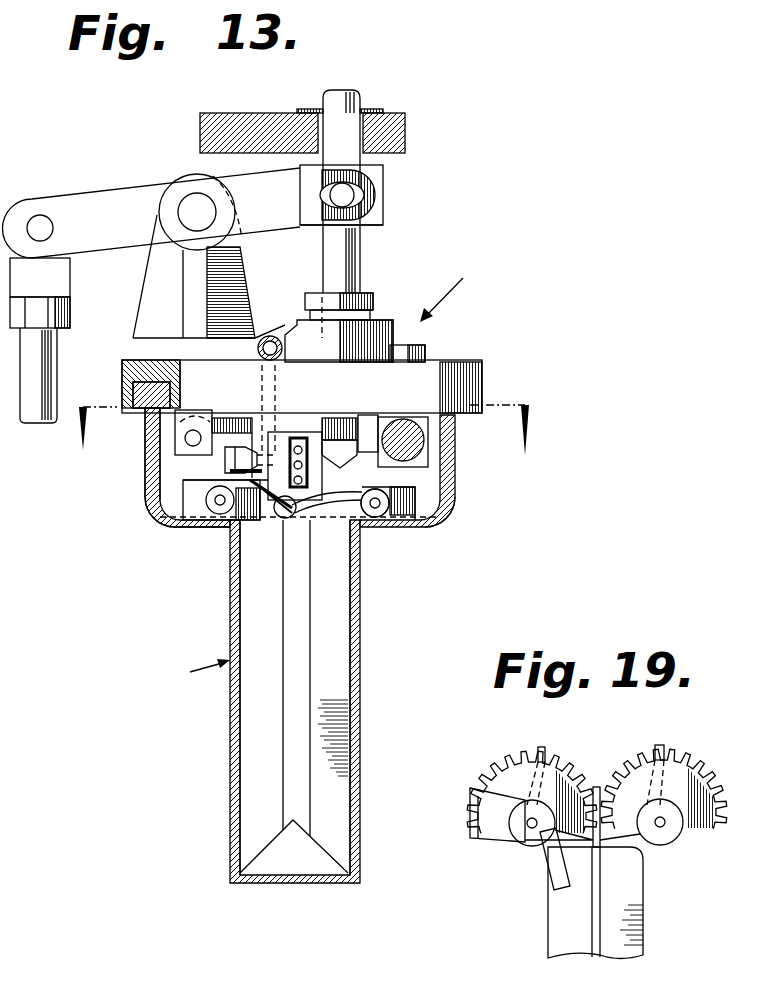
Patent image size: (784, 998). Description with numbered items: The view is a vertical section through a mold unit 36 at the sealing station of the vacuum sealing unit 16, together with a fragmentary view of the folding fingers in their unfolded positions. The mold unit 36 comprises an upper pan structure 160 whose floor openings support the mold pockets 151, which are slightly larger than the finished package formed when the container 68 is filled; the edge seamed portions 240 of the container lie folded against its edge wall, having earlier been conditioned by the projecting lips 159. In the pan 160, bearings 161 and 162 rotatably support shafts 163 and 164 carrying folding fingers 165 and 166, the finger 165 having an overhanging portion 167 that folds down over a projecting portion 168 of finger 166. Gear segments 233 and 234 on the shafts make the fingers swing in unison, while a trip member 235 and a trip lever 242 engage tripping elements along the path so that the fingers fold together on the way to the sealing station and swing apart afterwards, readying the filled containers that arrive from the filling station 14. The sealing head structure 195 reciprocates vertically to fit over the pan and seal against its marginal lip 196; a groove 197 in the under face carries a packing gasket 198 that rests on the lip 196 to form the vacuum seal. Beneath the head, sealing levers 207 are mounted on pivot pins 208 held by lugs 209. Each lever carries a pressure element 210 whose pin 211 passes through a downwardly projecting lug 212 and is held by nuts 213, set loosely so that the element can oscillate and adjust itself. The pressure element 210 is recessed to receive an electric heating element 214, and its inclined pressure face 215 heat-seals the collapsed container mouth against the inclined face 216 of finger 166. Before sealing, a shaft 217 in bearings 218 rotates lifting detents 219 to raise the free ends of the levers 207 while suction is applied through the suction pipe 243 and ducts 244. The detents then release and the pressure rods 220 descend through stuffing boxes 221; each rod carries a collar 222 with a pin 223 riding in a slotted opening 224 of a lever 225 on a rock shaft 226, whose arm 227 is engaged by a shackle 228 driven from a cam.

In FIG. 13, the filling station 14 is at (303, 437).
In FIG. 13, the vacuum sealing unit 16 is at (455, 294).
In FIG. 13, the mold unit 36 is at (194, 671).
In FIG. 13, the container 68 is at (258, 771).
In FIG. 19, the container 68 is at (643, 941).
In FIG. 13, the mold pocket 151 is at (362, 585).
In FIG. 13, the projecting lip 159 is at (280, 856).
In FIG. 13, the upper pan structure 160 is at (452, 452).
In FIG. 13, the bearing 161 is at (440, 510).
In FIG. 13, the bearing 162 is at (200, 513).
In FIG. 13, the shaft 163 is at (410, 520).
In FIG. 19, the shaft 163 is at (676, 836).
In FIG. 13, the shaft 164 is at (220, 512).
In FIG. 19, the shaft 164 is at (532, 830).
In FIG. 13, the folding finger 165 is at (380, 515).
In FIG. 19, the folding finger 165 is at (672, 764).
In FIG. 13, the folding finger 166 is at (245, 515).
In FIG. 19, the folding finger 166 is at (548, 768).
In FIG. 13, the overhanging portion 167 is at (370, 487).
In FIG. 13, the projecting portion 168 is at (266, 496).
In FIG. 13, the sealing head structure 195 is at (478, 368).
In FIG. 13, the marginal lip 196 is at (150, 424).
In FIG. 13, the groove 197 is at (182, 398).
In FIG. 13, the packing gasket 198 is at (135, 390).
In FIG. 13, the sealing lever 207 is at (280, 453).
In FIG. 13, the pivot pin 208 is at (185, 439).
In FIG. 13, the lug 209 is at (195, 424).
In FIG. 13, the pressure element 210 is at (333, 418).
In FIG. 13, the pin 211 is at (262, 405).
In FIG. 13, the downwardly projecting lug 212 is at (190, 480).
In FIG. 13, the nut 213 is at (225, 460).
In FIG. 13, the electric heating element 214 is at (308, 462).
In FIG. 13, the inclined pressure face 215 is at (300, 497).
In FIG. 13, the inclined face 216 is at (300, 514).
In FIG. 13, the shaft 217 is at (420, 435).
In FIG. 13, the bearing 218 is at (438, 460).
In FIG. 13, the lifting detent 219 is at (368, 436).
In FIG. 13, the pressure rod 220 is at (350, 272).
In FIG. 13, the stuffing box 221 is at (265, 337).
In FIG. 13, the collar 222 is at (385, 173).
In FIG. 13, the pin 223 is at (345, 195).
In FIG. 13, the slotted opening 224 is at (383, 218).
In FIG. 13, the lever 225 is at (268, 236).
In FIG. 13, the rock shaft 226 is at (185, 213).
In FIG. 13, the arm 227 is at (158, 186).
In FIG. 13, the shackle 228 is at (45, 366).
In FIG. 19, the gear segment 233 is at (505, 772).
In FIG. 19, the gear segment 234 is at (705, 790).
In FIG. 19, the trip member 235 is at (470, 797).
In FIG. 13, the edge seamed portion 240 is at (305, 740).
In FIG. 19, the edge seamed portion 240 is at (600, 890).
In FIG. 19, the trip lever 242 is at (555, 886).
In FIG. 13, the suction pipe 243 is at (284, 350).
In FIG. 13, the duct 244 is at (280, 380).